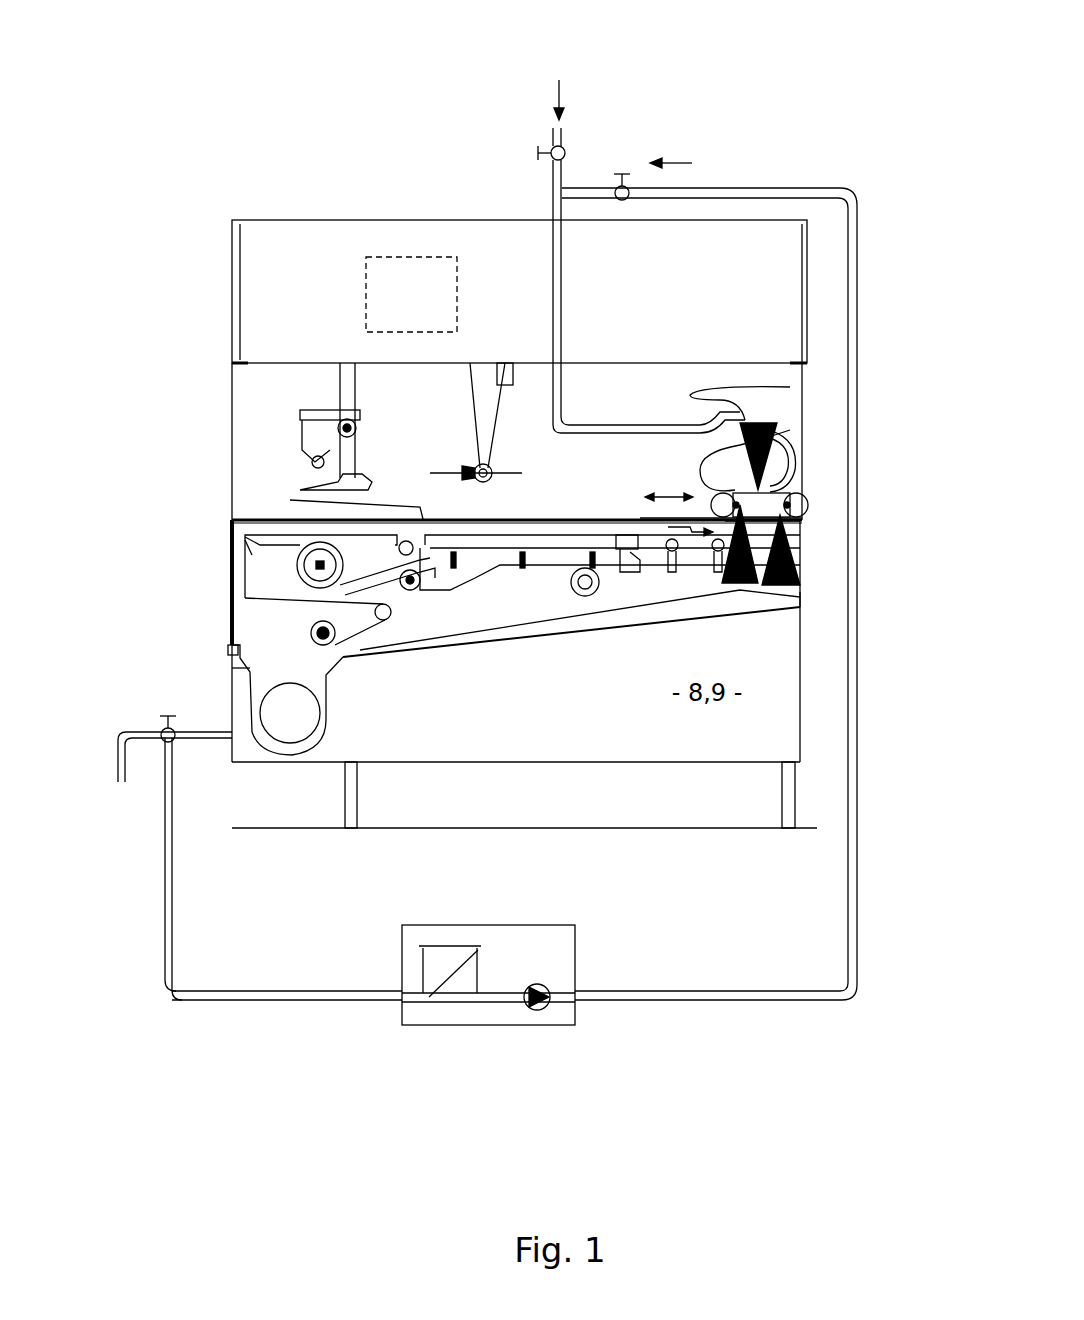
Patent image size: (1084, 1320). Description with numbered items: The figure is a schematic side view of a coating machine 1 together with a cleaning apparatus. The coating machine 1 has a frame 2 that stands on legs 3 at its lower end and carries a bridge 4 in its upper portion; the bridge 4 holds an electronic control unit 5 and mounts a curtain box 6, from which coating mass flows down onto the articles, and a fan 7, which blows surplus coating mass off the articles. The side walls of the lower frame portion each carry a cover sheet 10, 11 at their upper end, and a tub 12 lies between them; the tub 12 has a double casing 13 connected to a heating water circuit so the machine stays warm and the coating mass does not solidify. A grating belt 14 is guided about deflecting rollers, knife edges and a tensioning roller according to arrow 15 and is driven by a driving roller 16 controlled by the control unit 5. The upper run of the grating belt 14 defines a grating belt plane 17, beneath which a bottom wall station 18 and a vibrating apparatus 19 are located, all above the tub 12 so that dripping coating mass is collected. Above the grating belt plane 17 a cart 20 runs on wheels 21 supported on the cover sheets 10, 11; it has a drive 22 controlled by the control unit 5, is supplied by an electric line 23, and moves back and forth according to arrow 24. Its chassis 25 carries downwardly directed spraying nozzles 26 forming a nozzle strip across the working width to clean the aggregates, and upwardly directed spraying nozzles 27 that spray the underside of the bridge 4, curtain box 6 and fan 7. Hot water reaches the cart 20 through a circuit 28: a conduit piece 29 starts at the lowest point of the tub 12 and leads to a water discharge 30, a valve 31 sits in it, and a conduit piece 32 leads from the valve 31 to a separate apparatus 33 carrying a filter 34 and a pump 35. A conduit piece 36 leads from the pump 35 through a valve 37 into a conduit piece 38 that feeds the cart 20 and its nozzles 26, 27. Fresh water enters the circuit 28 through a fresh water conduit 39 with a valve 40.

The coating machine 1 is at (270, 125).
The frame 2 is at (457, 590).
The legs 3 is at (362, 800).
The bridge 4 is at (320, 255).
The electronic control unit 5 is at (395, 257).
The curtain box 6 is at (458, 385).
The fan 7 is at (458, 418).
The cover sheet 10 is at (432, 445).
The cover sheet 11 is at (432, 446).
The tub 12 is at (607, 785).
The double casing 13 is at (257, 690).
The grating belt 14 is at (203, 524).
The arrow 15 is at (790, 545).
The driving roller 16 is at (248, 595).
The grating belt plane 17 is at (264, 412).
The bottom wall station 18 is at (224, 562).
The vibrating apparatus 19 is at (522, 590).
The cart 20 is at (831, 489).
The wheels 21 is at (800, 505).
The drive 22 is at (789, 500).
The electric line 23 is at (814, 379).
The arrow 24 is at (819, 430).
The chassis 25 is at (849, 443).
The spraying nozzles 26 is at (790, 510).
The spraying nozzles 27 is at (830, 504).
The circuit 28 is at (305, 965).
The conduit piece 29 is at (202, 740).
The water discharge 30 is at (118, 760).
The valve 31 is at (165, 742).
The conduit piece 32 is at (170, 930).
The apparatus 33 is at (440, 910).
The filter 34 is at (442, 958).
The pump 35 is at (540, 985).
The conduit piece 36 is at (690, 993).
The valve 37 is at (643, 104).
The conduit piece 38 is at (580, 428).
The fresh water conduit 39 is at (556, 144).
The valve 40 is at (552, 151).